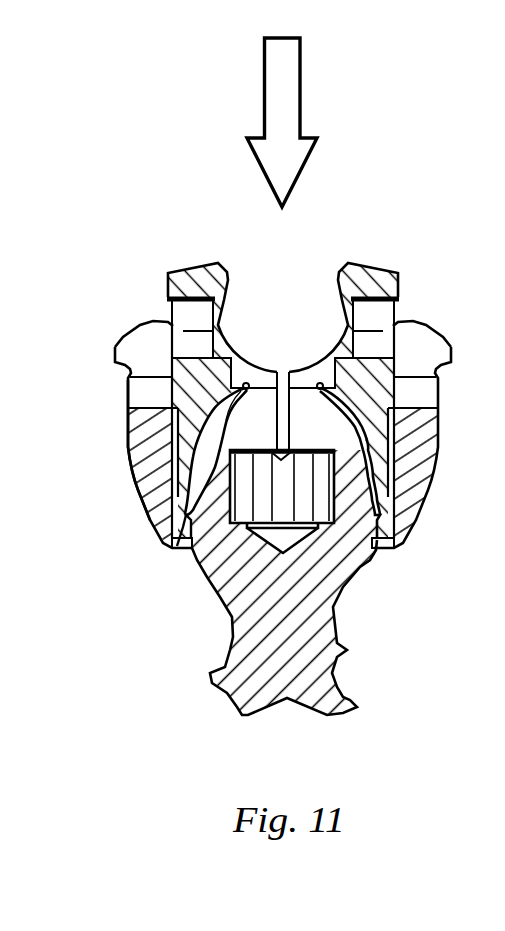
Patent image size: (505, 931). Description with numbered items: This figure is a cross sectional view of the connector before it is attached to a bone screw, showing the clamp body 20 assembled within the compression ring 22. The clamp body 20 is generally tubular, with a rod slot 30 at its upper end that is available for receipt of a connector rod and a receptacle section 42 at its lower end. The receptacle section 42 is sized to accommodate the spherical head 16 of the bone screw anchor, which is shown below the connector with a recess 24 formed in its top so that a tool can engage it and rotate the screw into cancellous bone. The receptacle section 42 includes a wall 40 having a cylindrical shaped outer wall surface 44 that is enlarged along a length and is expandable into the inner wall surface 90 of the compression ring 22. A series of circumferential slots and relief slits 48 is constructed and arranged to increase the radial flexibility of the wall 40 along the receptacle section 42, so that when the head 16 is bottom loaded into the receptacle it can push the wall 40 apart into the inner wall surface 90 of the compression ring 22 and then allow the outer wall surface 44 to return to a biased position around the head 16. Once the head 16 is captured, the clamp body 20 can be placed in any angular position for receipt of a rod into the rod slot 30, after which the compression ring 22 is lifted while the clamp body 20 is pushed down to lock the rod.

The spherical head 16 is at (358, 577).
The clamp body 20 is at (153, 285).
The compression ring 22 is at (120, 427).
The recess 24 is at (320, 502).
The rod slot 30 is at (308, 287).
The wall 40 is at (185, 433).
The receptacle section 42 is at (178, 490).
The outer wall surface 44 is at (398, 455).
The circumferential slots and relief slits 48 is at (247, 385).
The inner wall surface 90 is at (393, 422).